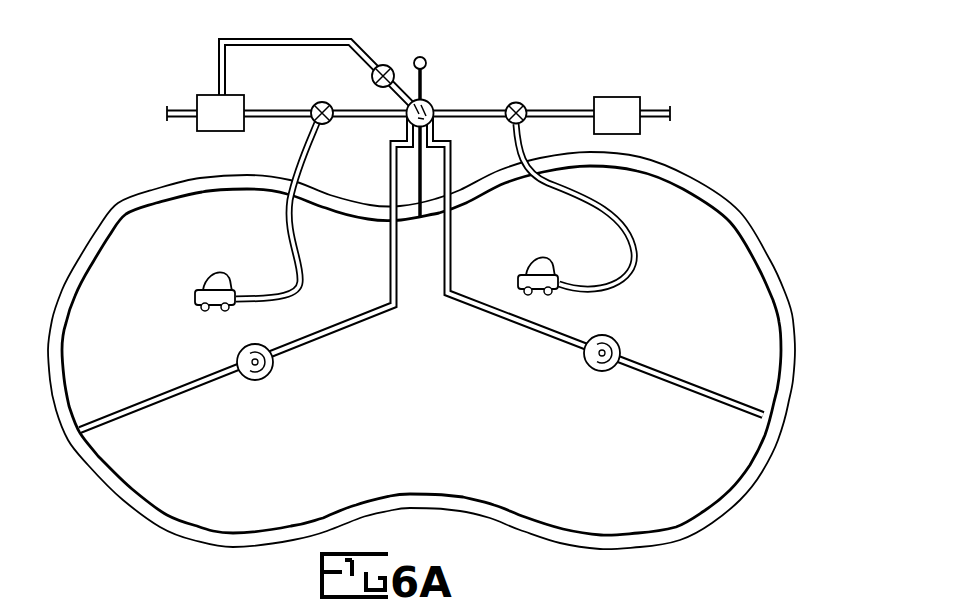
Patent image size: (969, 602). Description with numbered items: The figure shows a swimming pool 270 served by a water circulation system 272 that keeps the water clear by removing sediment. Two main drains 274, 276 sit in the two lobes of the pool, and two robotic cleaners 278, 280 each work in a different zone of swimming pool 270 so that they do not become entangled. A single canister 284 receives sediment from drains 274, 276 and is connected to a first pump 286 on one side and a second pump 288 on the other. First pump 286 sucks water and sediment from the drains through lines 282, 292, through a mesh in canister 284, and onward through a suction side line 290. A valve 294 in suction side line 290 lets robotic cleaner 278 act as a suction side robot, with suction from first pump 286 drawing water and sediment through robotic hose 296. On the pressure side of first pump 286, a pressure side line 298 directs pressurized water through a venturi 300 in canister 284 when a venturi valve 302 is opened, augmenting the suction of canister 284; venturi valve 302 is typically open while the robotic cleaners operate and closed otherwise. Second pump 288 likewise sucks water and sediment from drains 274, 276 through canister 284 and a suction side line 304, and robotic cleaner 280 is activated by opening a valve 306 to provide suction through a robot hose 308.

The swimming pool 270 is at (529, 454).
The water circulation system 272 is at (194, 64).
The main drain 274 is at (259, 381).
The main drain 276 is at (597, 372).
The robotic cleaner 278 is at (195, 297).
The robotic cleaner 280 is at (518, 280).
The line 282 is at (340, 328).
The canister 284 is at (430, 105).
The first pump 286 is at (214, 132).
The second pump 288 is at (627, 97).
The suction side line 290 is at (302, 117).
The line 292 is at (558, 337).
The valve 294 is at (315, 106).
The robotic hose 296 is at (287, 215).
The pressure side line 298 is at (293, 38).
The venturi 300 is at (433, 121).
The venturi valve 302 is at (400, 50).
The suction side line 304 is at (553, 110).
The valve 306 is at (512, 104).
The robot hose 308 is at (637, 232).